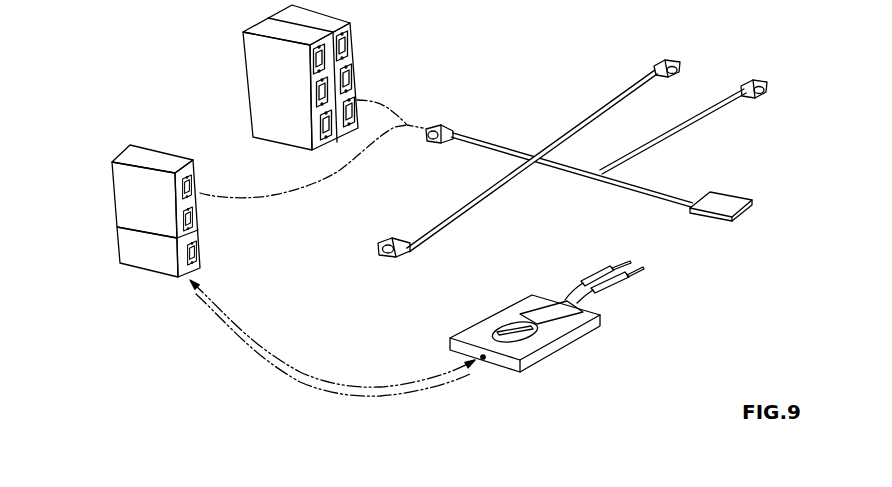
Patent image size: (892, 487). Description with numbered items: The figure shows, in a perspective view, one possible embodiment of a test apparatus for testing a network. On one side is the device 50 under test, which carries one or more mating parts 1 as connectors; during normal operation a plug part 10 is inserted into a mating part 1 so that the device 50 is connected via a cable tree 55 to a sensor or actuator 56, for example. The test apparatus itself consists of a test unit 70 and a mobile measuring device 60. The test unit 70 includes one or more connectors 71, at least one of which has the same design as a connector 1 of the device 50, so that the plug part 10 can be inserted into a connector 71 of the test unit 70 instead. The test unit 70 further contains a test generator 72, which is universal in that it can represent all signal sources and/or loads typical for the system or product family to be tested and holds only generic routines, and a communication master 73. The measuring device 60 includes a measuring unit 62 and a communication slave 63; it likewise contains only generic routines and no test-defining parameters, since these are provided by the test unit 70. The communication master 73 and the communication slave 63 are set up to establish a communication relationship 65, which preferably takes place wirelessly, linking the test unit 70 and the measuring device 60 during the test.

The mating part 1 is at (347, 95).
The plug part 10 is at (443, 128).
The device 50 is at (240, 75).
The cable tree 55 is at (567, 166).
The sensor or actuator 56 is at (722, 203).
The measuring device 60 is at (568, 362).
The measuring unit 62 is at (553, 315).
The communication slave 63 is at (483, 357).
The communication relationship 65 is at (286, 378).
The test unit 70 is at (117, 191).
The connector 71 is at (172, 172).
The test generator 72 is at (140, 190).
The communication master 73 is at (150, 252).